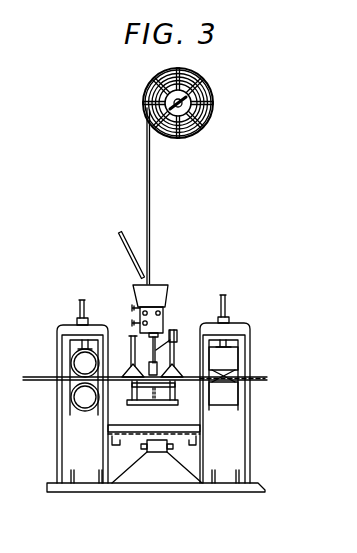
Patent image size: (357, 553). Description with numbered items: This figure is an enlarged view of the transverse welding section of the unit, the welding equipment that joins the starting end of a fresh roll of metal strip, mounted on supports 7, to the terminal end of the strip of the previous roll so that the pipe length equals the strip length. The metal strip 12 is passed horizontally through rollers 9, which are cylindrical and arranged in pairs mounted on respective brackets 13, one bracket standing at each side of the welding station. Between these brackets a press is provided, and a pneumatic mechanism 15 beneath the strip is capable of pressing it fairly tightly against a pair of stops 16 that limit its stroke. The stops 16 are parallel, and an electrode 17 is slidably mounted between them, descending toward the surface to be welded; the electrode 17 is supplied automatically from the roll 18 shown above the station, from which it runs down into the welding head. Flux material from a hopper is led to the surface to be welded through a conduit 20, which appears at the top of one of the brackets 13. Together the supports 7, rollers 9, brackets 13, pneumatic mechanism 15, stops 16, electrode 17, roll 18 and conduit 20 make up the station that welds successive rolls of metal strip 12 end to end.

The supports 7 is at (233, 310).
The rollers 9 is at (80, 364).
The metal strip 12 is at (267, 381).
The brackets 13 is at (65, 458).
The pneumatic mechanism 15 is at (158, 452).
The stops 16 is at (129, 370).
The electrode 17 is at (173, 328).
The roll 18 is at (212, 111).
The conduit 20 is at (78, 303).